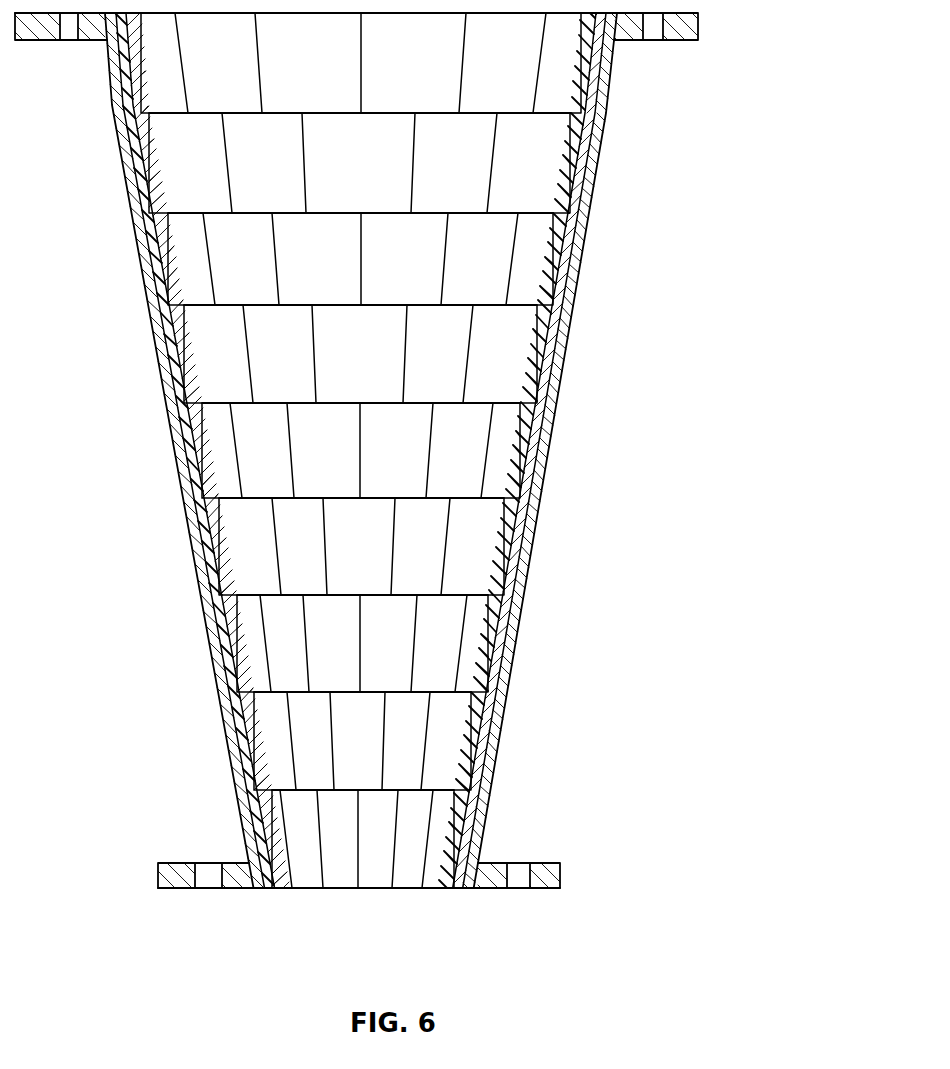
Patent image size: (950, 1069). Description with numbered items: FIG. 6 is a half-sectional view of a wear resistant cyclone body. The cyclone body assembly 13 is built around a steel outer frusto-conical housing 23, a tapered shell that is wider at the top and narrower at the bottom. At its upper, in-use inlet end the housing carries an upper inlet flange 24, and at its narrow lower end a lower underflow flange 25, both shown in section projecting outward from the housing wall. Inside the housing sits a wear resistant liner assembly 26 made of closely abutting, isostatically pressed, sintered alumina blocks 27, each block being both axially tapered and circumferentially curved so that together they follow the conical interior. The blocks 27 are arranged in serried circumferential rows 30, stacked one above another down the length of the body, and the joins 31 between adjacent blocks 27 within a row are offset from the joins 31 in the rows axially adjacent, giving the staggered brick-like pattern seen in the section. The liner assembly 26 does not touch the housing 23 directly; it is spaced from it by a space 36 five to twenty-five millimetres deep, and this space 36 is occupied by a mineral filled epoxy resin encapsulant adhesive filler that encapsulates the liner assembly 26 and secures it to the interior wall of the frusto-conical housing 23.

The cyclone body assembly 13 is at (580, 355).
The steel outer frusto-conical housing 23 is at (543, 472).
The upper inlet flange 24 is at (703, 42).
The lower underflow flange 25 is at (545, 862).
The wear resistant liner assembly 26 is at (285, 262).
The sintered alumina blocks 27 is at (491, 258).
The serried circumferential rows 30 is at (100, 112).
The joins 31 is at (417, 160).
The space 36 is at (523, 593).